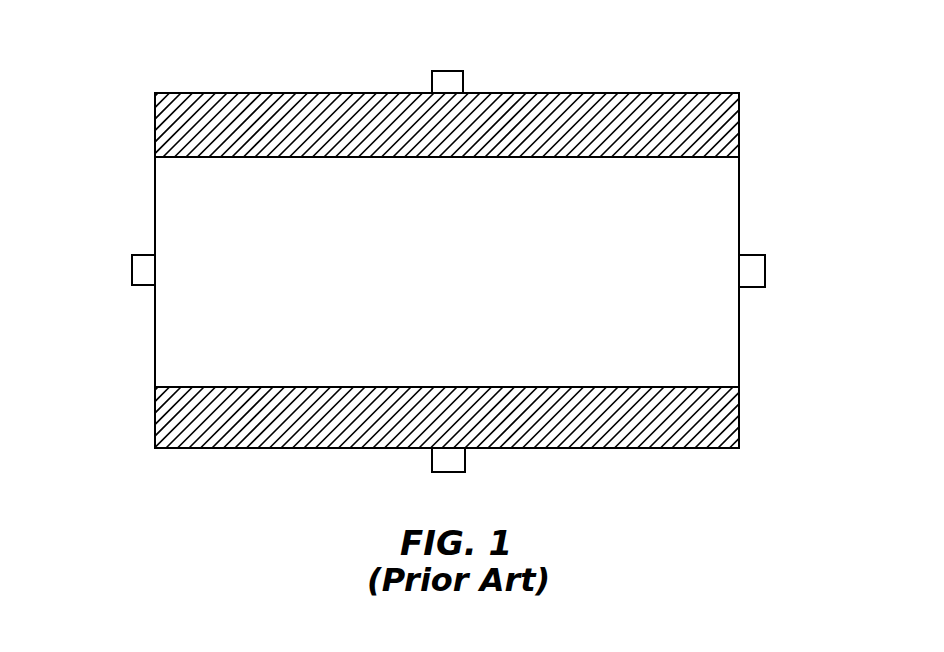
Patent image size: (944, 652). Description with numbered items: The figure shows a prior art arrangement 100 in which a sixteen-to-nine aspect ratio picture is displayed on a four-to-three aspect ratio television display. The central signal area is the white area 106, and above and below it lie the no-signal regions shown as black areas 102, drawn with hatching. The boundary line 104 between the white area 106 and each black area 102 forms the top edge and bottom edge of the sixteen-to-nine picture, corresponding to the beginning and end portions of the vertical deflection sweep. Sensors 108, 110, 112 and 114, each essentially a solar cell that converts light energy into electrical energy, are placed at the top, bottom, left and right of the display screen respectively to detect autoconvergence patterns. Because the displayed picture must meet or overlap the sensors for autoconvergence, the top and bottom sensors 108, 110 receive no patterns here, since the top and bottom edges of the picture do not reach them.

The prior art device 100 is at (602, 71).
The black area 102 is at (740, 126).
The interface 104 is at (740, 157).
The white area 106 is at (740, 207).
The top sensor 108 is at (447, 70).
The bottom sensor 110 is at (447, 473).
The left sensor 112 is at (130, 272).
The right sensor 114 is at (765, 273).